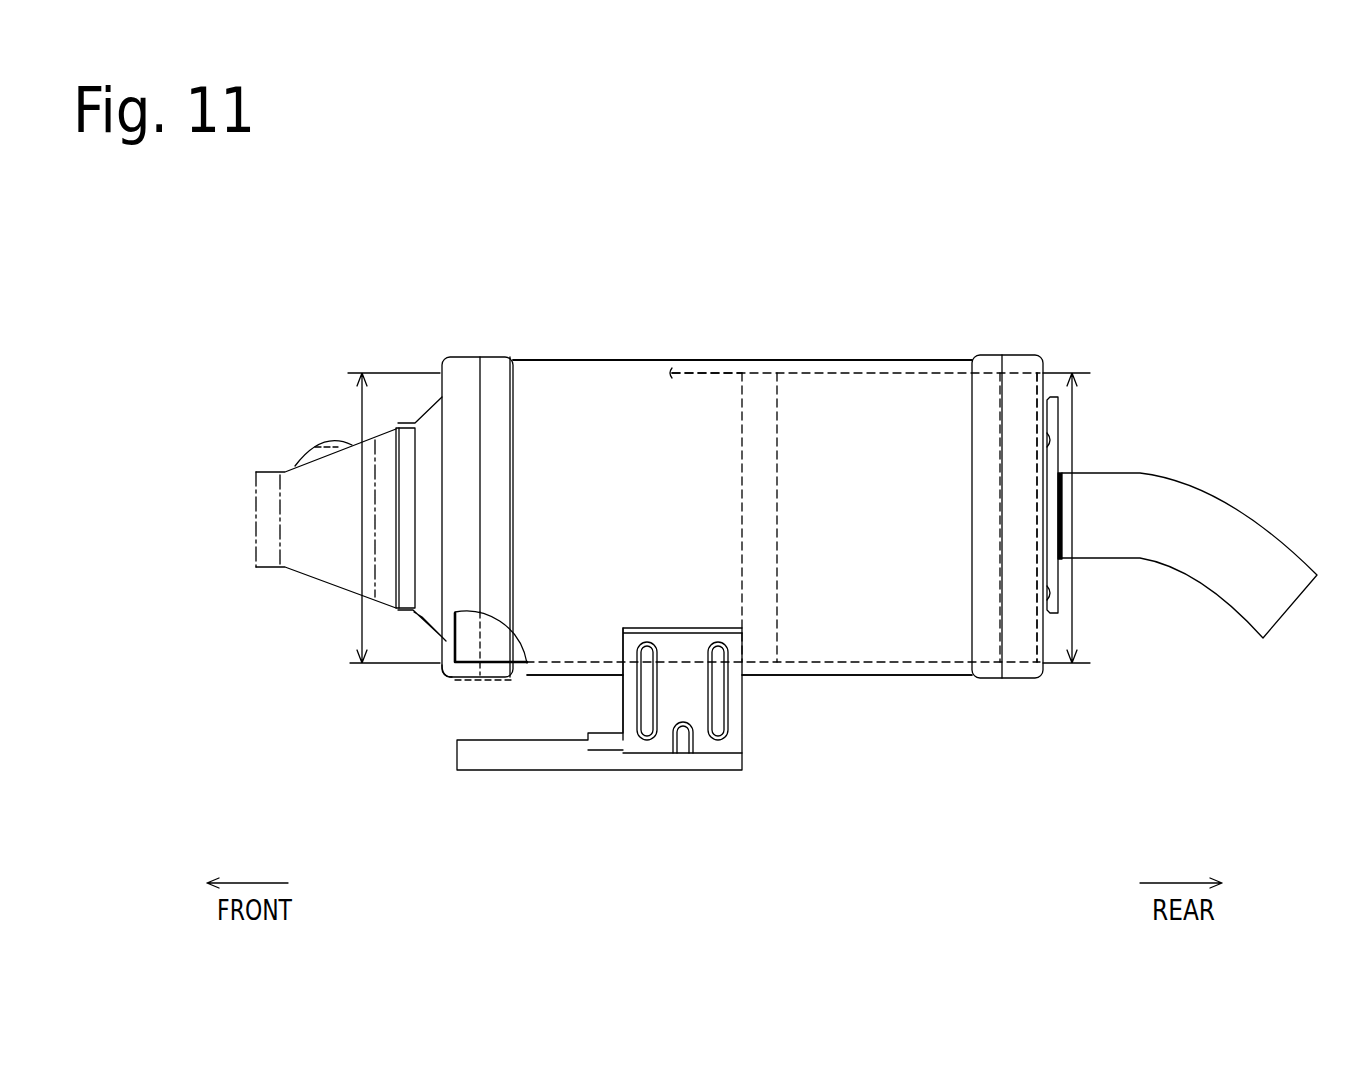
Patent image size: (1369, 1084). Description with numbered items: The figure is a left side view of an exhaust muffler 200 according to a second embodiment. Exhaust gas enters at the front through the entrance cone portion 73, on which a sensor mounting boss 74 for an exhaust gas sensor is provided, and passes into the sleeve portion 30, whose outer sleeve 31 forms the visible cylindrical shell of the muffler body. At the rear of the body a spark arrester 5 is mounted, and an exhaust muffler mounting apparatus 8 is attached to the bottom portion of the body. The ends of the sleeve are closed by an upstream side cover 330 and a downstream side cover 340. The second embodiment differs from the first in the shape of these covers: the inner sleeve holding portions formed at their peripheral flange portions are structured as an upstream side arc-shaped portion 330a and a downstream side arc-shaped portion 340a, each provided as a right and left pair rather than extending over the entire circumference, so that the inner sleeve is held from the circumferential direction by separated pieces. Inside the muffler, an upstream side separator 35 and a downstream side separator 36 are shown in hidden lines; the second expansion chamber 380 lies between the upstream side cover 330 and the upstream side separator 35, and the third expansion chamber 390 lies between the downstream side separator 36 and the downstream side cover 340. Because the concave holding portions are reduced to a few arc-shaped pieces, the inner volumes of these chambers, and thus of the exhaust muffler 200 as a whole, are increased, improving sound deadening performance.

The exhaust muffler 200 is at (992, 216).
The sleeve portion 30 is at (719, 454).
The outer sleeve 31 is at (570, 358).
The upstream side separator 35 is at (743, 438).
The downstream side separator 36 is at (1000, 457).
The second expansion chamber 380 is at (637, 468).
The third expansion chamber 390 is at (1022, 593).
The upstream side cover 330 is at (495, 357).
The upstream side arc-shaped portion 330a is at (358, 423).
The downstream side cover 340 is at (995, 357).
The downstream side arc-shaped portion 340a is at (1073, 605).
The entrance cone portion 73 is at (303, 577).
The sensor mounting boss 74 is at (318, 437).
The spark arrester 5 is at (1176, 440).
The exhaust muffler mounting apparatus 8 is at (728, 800).